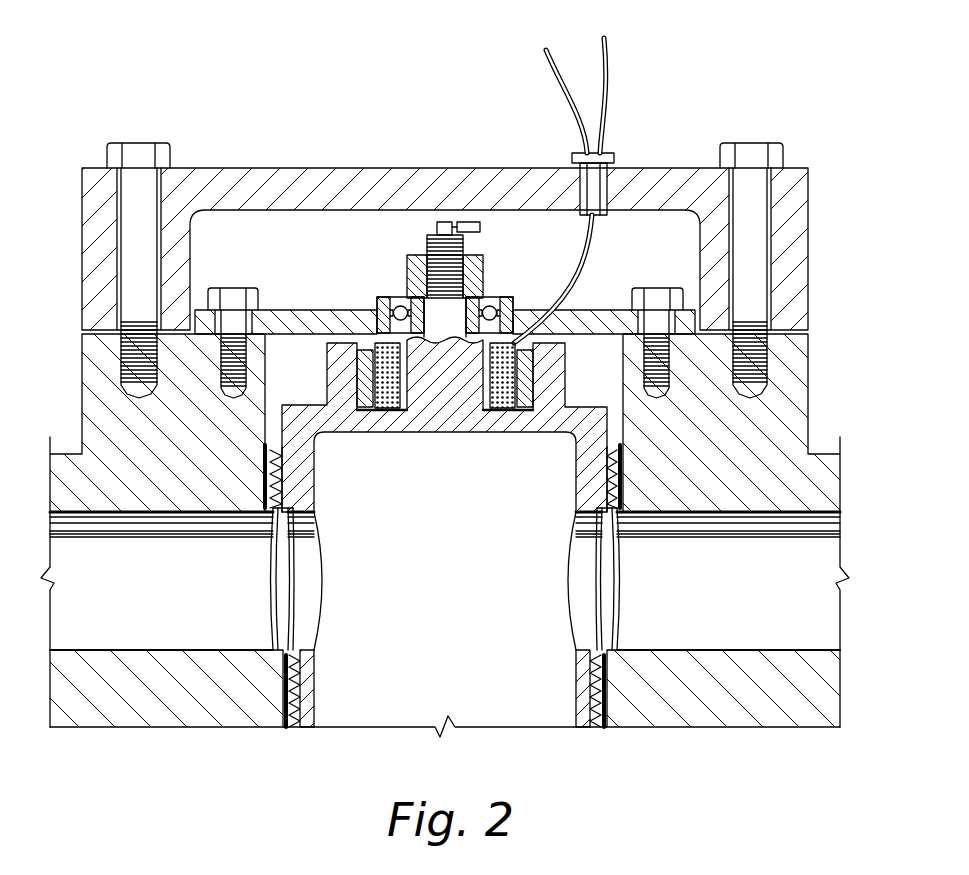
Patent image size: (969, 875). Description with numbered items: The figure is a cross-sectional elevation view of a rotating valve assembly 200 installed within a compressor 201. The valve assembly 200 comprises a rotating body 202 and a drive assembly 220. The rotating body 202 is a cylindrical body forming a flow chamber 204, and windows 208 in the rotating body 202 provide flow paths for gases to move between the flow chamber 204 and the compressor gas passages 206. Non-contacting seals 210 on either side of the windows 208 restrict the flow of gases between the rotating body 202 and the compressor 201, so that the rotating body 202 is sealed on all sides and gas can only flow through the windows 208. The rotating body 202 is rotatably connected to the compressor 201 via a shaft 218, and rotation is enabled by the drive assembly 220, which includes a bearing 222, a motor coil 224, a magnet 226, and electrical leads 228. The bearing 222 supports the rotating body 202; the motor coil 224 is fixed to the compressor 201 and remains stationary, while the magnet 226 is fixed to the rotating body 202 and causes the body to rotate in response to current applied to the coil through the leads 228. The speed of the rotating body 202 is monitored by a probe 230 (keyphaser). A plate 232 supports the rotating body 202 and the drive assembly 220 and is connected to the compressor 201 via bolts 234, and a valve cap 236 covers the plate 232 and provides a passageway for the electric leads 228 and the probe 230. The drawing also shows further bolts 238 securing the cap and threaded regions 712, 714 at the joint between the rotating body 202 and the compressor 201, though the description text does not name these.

The rotating valve assembly 200 is at (483, 141).
The compressor 201 is at (815, 366).
The rotating body 202 is at (609, 428).
The flow chamber 204 is at (492, 717).
The compressor gas passages 206 is at (177, 597).
The windows 208 is at (318, 575).
The non-contacting seals 210 is at (620, 477).
The shaft 218 is at (433, 253).
The drive assembly 220 is at (423, 295).
The bearing 222 is at (489, 306).
The motor coil 224 is at (512, 362).
The magnet 226 is at (528, 391).
The electrical leads 228 is at (607, 126).
The probe 230 is at (481, 226).
The plate 232 is at (348, 308).
The bolts 234 is at (232, 287).
The valve cap 236 is at (307, 166).
The cover bolts 238 is at (142, 148).
The threads 712 is at (272, 483).
The thread engagement 714 is at (277, 436).